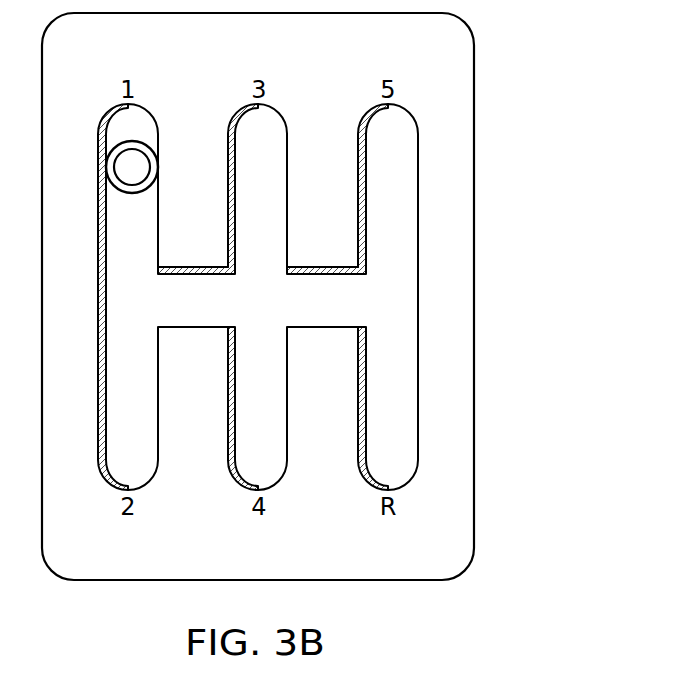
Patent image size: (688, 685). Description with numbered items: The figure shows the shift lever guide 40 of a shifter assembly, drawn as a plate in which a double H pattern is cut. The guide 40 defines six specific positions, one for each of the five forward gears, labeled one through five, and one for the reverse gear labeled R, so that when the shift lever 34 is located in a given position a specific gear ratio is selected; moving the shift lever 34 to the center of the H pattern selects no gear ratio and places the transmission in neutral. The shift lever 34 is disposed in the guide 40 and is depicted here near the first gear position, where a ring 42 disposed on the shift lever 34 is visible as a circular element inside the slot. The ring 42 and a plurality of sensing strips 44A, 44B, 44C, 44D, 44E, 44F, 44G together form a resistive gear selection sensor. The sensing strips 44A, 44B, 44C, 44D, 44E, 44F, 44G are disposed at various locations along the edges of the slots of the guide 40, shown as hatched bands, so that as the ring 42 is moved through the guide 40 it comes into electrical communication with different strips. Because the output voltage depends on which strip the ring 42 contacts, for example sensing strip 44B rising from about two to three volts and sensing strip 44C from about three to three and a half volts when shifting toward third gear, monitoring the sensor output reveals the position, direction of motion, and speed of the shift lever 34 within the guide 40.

The guide 40 is at (512, 97).
The ring 42 is at (118, 145).
The shift lever 34 is at (132, 178).
The sensing strip 44A is at (100, 312).
The sensing strip 44B is at (193, 270).
The sensing strip 44C is at (227, 173).
The sensing strip 44D is at (227, 420).
The sensing strip 44E is at (323, 270).
The sensing strip 44F is at (357, 173).
The sensing strip 44G is at (357, 420).